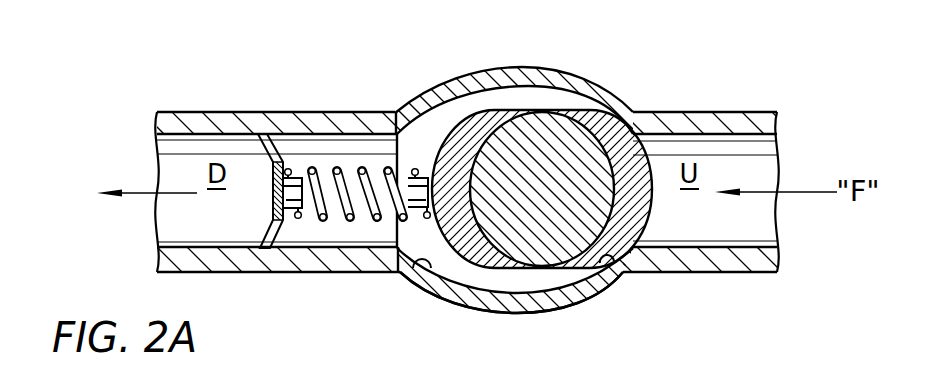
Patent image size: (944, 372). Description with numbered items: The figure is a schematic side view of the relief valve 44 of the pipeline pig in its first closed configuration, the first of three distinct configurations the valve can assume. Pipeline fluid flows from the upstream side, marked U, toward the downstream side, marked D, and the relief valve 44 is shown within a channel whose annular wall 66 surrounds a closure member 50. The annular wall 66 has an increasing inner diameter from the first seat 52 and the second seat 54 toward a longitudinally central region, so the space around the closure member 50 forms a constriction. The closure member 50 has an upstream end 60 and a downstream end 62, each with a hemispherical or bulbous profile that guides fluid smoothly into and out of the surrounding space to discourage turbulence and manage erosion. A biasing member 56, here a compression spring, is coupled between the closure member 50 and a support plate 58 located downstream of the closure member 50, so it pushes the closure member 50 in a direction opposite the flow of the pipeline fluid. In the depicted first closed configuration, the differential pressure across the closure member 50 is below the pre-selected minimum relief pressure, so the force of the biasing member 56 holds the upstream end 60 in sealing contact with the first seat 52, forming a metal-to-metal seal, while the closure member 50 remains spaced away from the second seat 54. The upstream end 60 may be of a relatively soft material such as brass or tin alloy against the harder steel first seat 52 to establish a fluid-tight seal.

The relief valve 44 is at (750, 73).
The closure member 50 is at (565, 137).
The first seat 52 is at (598, 266).
The second seat 54 is at (421, 281).
The biasing member 56 is at (340, 168).
The support plate 58 is at (276, 173).
The upstream end 60 is at (617, 138).
The downstream end 62 is at (477, 125).
The annular wall 66 is at (491, 303).